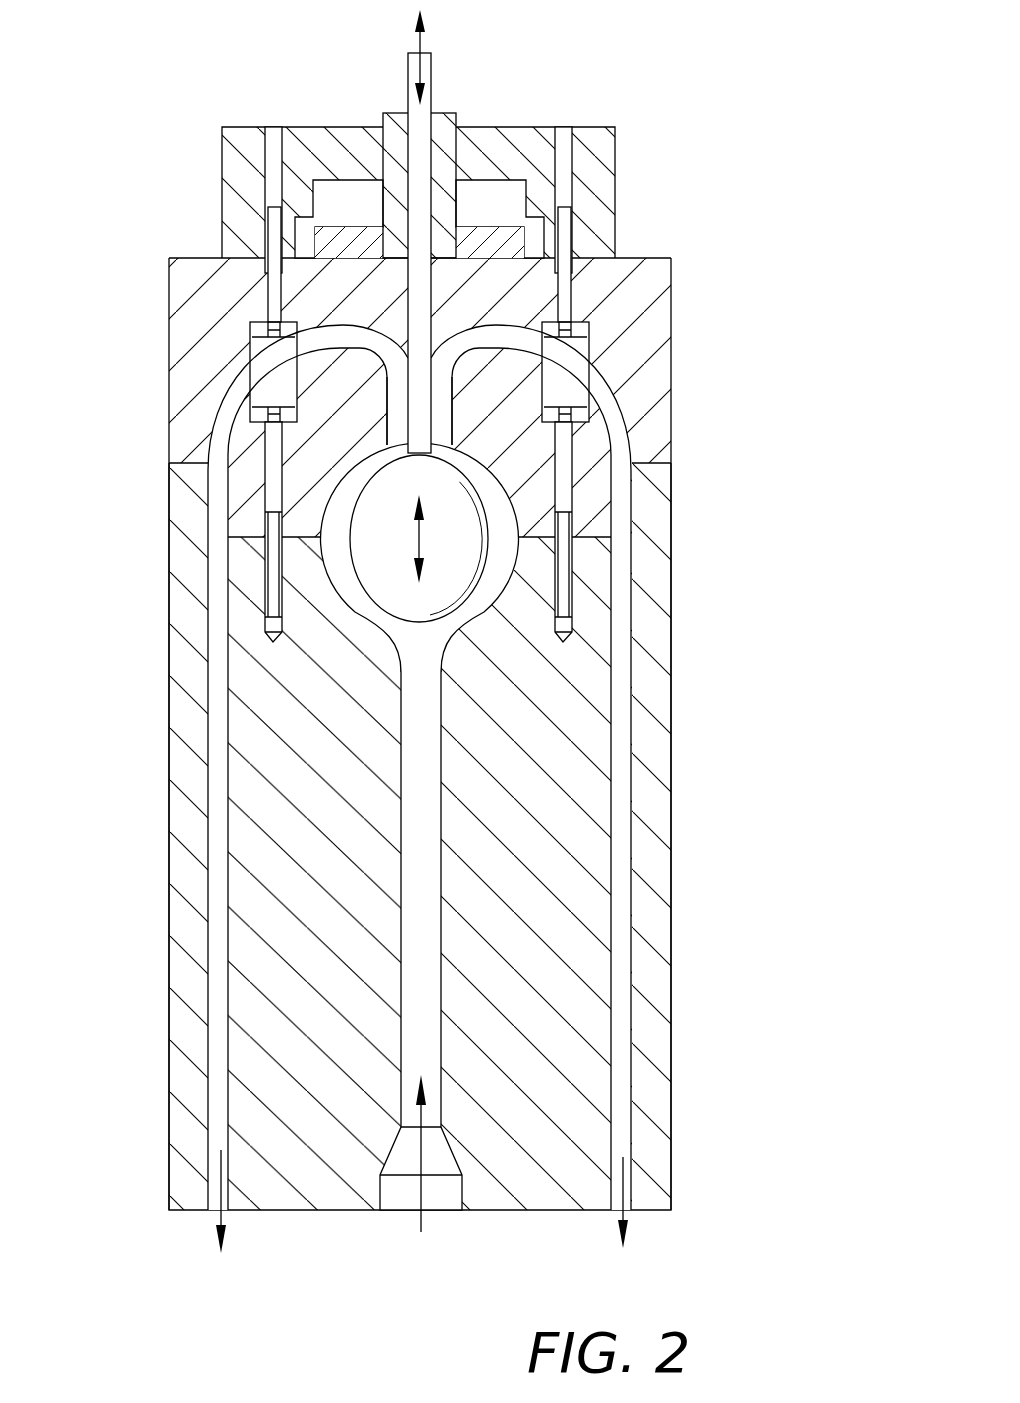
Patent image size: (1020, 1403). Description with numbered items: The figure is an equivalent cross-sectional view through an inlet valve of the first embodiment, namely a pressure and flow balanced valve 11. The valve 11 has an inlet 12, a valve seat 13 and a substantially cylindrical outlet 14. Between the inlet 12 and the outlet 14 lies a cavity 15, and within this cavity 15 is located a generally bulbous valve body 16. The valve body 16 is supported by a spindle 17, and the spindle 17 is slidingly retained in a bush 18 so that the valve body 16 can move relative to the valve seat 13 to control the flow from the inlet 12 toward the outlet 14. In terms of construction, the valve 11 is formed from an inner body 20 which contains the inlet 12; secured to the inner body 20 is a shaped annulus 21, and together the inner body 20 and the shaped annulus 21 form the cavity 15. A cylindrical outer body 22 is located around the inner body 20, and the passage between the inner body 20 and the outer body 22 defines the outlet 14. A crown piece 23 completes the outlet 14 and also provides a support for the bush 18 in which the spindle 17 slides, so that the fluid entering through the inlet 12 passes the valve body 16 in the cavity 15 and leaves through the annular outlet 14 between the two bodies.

The pressure and flow balanced valve 11 is at (766, 419).
The inlet 12 is at (425, 862).
The valve seat 13 is at (382, 439).
The outlet 14 is at (218, 692).
The cavity 15 is at (370, 600).
The valve body 16 is at (375, 547).
The spindle 17 is at (431, 80).
The bush 18 is at (445, 165).
The inner body 20 is at (270, 1012).
The shaped annulus 21 is at (245, 441).
The outer body 22 is at (180, 880).
The crown piece 23 is at (176, 306).